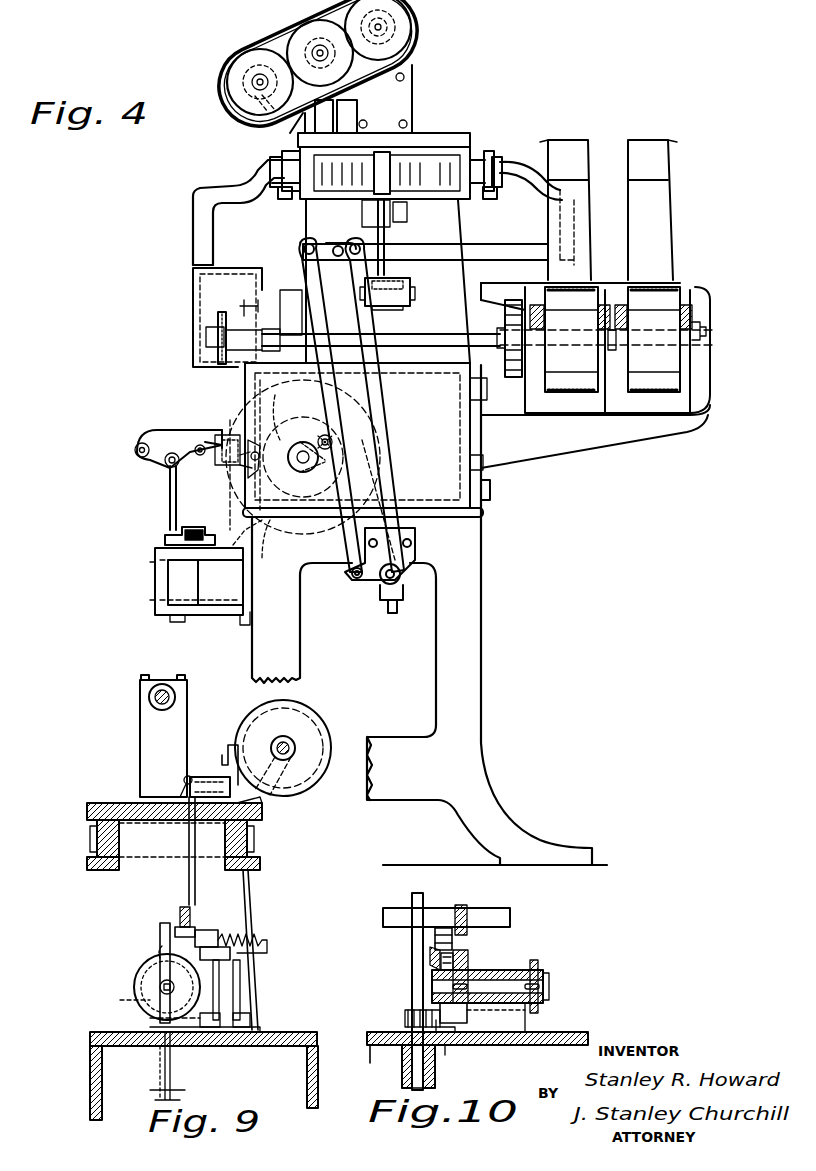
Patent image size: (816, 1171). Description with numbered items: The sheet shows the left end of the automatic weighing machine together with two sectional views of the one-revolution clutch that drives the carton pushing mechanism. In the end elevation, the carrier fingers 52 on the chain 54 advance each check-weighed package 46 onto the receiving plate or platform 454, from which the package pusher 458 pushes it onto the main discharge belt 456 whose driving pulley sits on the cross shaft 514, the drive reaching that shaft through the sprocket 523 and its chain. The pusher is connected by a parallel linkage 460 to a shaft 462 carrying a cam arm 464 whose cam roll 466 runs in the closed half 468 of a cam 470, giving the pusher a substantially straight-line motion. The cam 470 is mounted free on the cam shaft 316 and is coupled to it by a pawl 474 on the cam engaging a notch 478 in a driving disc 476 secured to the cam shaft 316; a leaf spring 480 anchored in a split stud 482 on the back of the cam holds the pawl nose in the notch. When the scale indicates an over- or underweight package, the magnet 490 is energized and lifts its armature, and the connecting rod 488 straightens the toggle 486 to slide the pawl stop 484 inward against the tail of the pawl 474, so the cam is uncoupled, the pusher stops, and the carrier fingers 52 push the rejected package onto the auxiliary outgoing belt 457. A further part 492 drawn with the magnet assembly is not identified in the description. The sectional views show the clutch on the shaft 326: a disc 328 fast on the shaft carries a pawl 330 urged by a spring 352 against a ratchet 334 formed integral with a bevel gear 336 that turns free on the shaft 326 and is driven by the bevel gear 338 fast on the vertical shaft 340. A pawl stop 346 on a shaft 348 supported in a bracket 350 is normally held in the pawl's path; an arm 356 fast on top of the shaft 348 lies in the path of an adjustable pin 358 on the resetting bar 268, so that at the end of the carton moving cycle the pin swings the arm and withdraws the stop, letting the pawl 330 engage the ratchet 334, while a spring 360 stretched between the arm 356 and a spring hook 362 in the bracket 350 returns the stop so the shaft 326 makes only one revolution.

In FIG. 4, the package 46 is at (578, 138).
In FIG. 4, the carrier fingers 52 is at (193, 222).
In FIG. 4, the chain 54 is at (296, 150).
In FIG. 4, the cam shaft 316 is at (320, 458).
In FIG. 4, the receiving plate or platform 454 is at (602, 282).
In FIG. 4, the discharge belt 456 is at (665, 282).
In FIG. 4, the auxiliary outgoing belt 457 is at (573, 284).
In FIG. 4, the package pusher 458 is at (521, 246).
In FIG. 4, the parallel linkage 460 is at (358, 326).
In FIG. 4, the shaft 462 is at (400, 578).
In FIG. 4, the cam arm 464 is at (358, 478).
In FIG. 4, the cam roll 466 is at (330, 436).
In FIG. 4, the closed half of cam 468 is at (346, 398).
In FIG. 4, the cam 470 is at (262, 410).
In FIG. 4, the pawl 474 is at (240, 470).
In FIG. 4, the driving disc 476 is at (262, 390).
In FIG. 4, the notch 478 is at (250, 500).
In FIG. 4, the leaf spring 480 is at (234, 560).
In FIG. 4, the split stud 482 is at (272, 525).
In FIG. 4, the pawl stop 484 is at (215, 428).
In FIG. 4, the toggle 486 is at (168, 466).
In FIG. 4, the connecting rod 488 is at (168, 498).
In FIG. 4, the magnet 490 is at (155, 588).
In FIG. 4, the switch actuator 492 is at (175, 532).
In FIG. 4, the cross shaft 514 is at (443, 337).
In FIG. 4, the sprocket 523 is at (222, 318).
In FIG. 9, the resetting bar 268 is at (204, 867).
In FIG. 10, the resetting bar 268 is at (496, 912).
In FIG. 9, the shaft 326 is at (160, 986).
In FIG. 10, the shaft 326 is at (512, 975).
In FIG. 9, the disc 328 is at (150, 968).
In FIG. 10, the disc 328 is at (468, 955).
In FIG. 9, the pawl 330 is at (110, 1018).
In FIG. 10, the pawl 330 is at (470, 1012).
In FIG. 9, the ratchet 334 is at (158, 950).
In FIG. 10, the ratchet 334 is at (440, 962).
In FIG. 10, the bevel gear 336 is at (432, 955).
In FIG. 10, the bevel gear 338 is at (406, 1019).
In FIG. 10, the vertical shaft 340 is at (410, 900).
In FIG. 9, the pawl stop 346 is at (172, 1040).
In FIG. 10, the pawl stop 346 is at (448, 1046).
In FIG. 9, the shaft 348 is at (233, 970).
In FIG. 9, the bracket 350 is at (250, 1001).
In FIG. 9, the spring 352 is at (120, 1000).
In FIG. 9, the arm 356 is at (200, 928).
In FIG. 10, the arm 356 is at (430, 927).
In FIG. 9, the adjustable pin 358 is at (162, 926).
In FIG. 10, the adjustable pin 358 is at (460, 904).
In FIG. 9, the spring 360 is at (240, 928).
In FIG. 9, the spring hook 362 is at (270, 945).